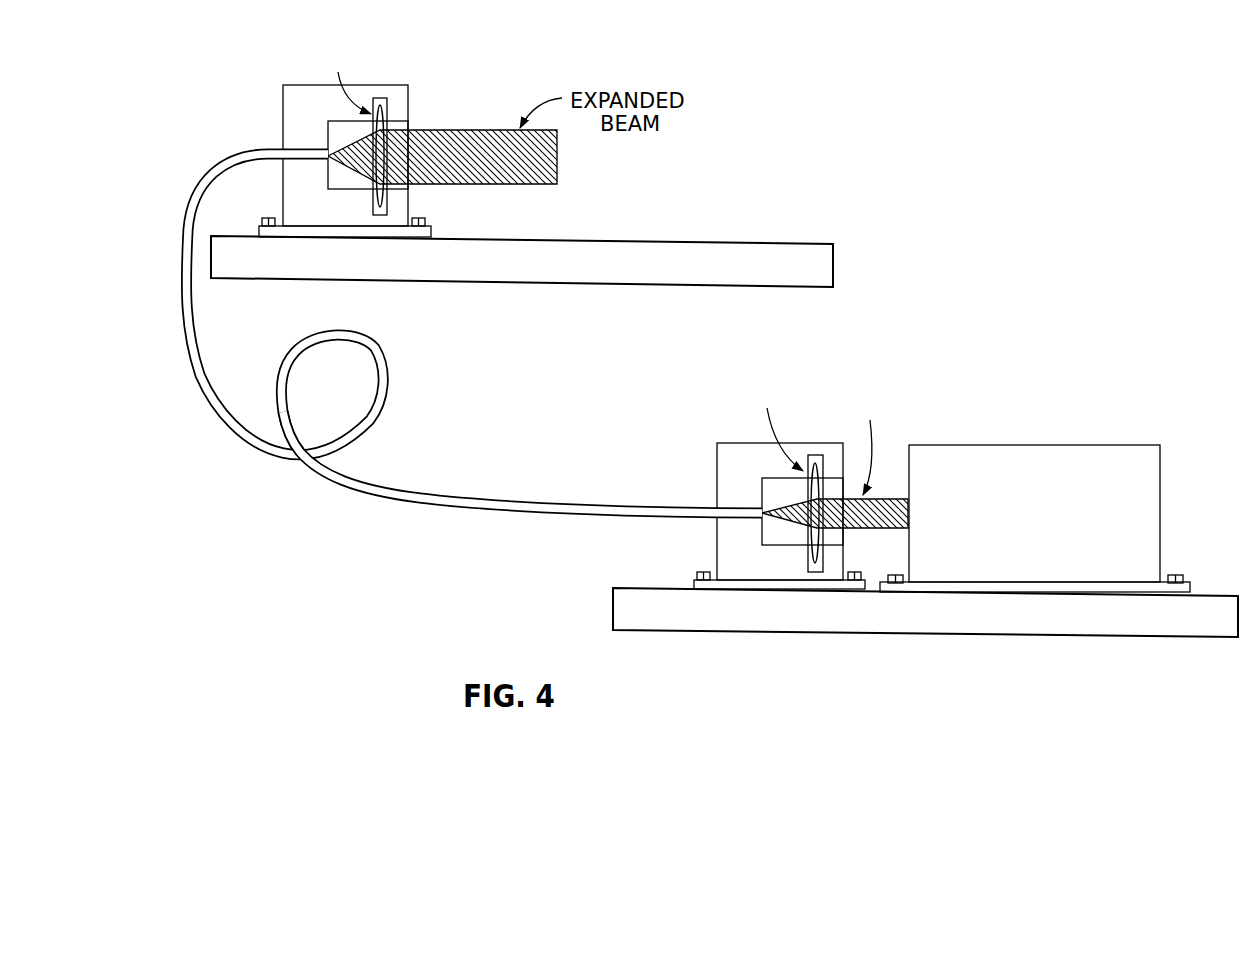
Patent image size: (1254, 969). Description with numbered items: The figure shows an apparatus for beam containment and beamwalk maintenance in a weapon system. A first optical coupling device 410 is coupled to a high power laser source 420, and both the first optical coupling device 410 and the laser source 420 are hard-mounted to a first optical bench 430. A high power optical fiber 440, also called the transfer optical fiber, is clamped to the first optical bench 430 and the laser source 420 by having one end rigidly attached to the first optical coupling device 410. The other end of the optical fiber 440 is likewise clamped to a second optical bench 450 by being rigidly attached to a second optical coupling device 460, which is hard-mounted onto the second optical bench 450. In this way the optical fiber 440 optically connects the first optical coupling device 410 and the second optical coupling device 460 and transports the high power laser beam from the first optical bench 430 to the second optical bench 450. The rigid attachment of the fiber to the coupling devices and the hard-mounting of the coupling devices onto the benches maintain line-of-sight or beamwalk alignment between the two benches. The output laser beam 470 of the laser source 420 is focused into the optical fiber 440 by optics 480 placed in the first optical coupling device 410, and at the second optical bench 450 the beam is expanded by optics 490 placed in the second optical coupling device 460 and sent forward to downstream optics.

The first optical coupling device 410 is at (732, 448).
The high power laser source 420 is at (1070, 460).
The first optical bench 430 is at (745, 622).
The high power optical fiber 440 is at (442, 507).
The second optical bench 450 is at (745, 250).
The second optical coupling device 460 is at (303, 121).
The output laser beam 470 is at (888, 502).
The optics 480 is at (762, 372).
The optics 490 is at (380, 95).